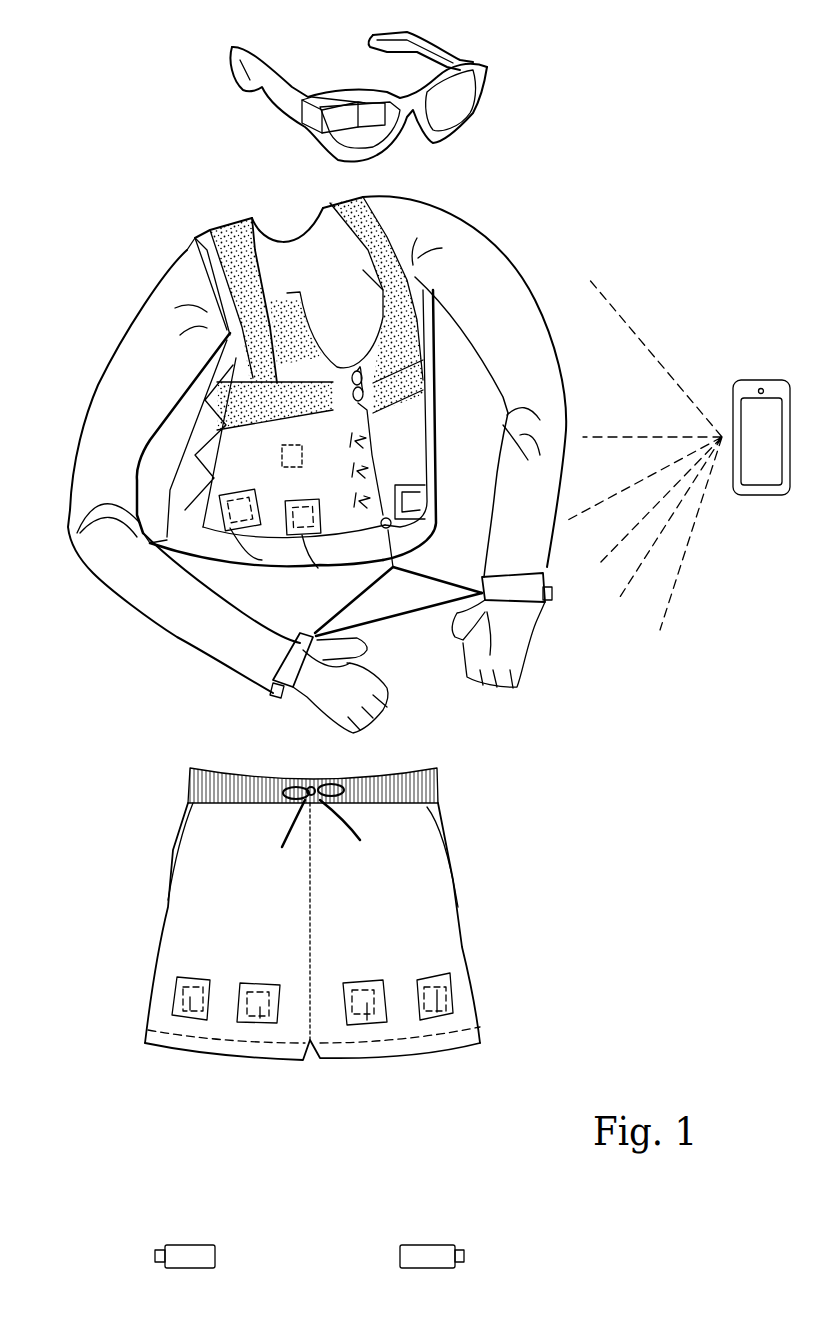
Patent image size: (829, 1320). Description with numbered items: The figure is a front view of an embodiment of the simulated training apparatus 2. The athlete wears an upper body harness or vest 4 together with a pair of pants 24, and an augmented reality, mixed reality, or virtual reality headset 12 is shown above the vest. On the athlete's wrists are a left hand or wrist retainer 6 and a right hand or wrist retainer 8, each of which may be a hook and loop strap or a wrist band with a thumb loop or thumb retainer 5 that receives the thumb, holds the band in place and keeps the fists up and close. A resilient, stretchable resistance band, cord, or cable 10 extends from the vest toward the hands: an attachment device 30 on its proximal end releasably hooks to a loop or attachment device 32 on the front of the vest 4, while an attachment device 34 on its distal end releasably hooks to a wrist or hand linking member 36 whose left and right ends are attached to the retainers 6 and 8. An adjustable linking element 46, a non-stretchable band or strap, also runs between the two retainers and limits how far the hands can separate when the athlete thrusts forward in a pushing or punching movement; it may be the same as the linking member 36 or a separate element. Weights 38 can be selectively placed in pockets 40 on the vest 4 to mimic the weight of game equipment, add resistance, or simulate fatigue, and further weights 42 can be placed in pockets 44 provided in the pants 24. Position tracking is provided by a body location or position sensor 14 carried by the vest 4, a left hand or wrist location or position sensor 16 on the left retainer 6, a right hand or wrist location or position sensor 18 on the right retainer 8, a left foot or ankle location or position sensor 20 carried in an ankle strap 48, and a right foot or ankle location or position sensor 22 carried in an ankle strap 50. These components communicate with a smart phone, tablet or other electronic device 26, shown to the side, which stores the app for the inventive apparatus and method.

The simulated training apparatus 2 is at (70, 183).
The upper body harness or vest 4 is at (218, 232).
The thumb loop or thumb retainer 5 is at (327, 677).
The left hand or wrist retainer 6 is at (535, 606).
The right hand or wrist retainer 8 is at (283, 658).
The resistance band, cord, or cable 10 is at (380, 457).
The augmented reality, mixed reality, or virtual reality headset 12 is at (488, 72).
The body location or position sensor 14 is at (280, 455).
The left hand or wrist location or position sensor 16 is at (554, 595).
The right hand or wrist location or position sensor 18 is at (278, 700).
The left foot or ankle location or position sensor 20 is at (457, 1249).
The right foot or ankle location or position sensor 22 is at (160, 1249).
The pants 24 is at (160, 908).
The electronic device 26 is at (758, 382).
The attachment device 30 is at (362, 392).
The loop or attachment device 32 is at (360, 367).
The attachment device 34 is at (342, 578).
The wrist or hand linking member 36 is at (440, 582).
The weights 38 is at (220, 510).
The pockets 40 is at (225, 522).
The weights 42 is at (367, 1003).
The pockets 44 is at (190, 997).
The adjustable linking element 46 is at (396, 614).
The ankle strap 48 is at (418, 1245).
The ankle strap 50 is at (200, 1245).